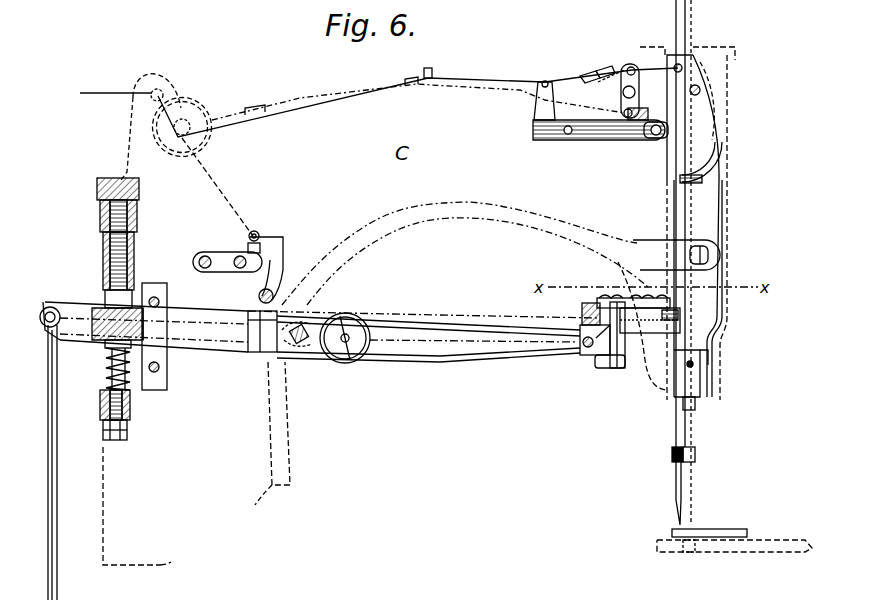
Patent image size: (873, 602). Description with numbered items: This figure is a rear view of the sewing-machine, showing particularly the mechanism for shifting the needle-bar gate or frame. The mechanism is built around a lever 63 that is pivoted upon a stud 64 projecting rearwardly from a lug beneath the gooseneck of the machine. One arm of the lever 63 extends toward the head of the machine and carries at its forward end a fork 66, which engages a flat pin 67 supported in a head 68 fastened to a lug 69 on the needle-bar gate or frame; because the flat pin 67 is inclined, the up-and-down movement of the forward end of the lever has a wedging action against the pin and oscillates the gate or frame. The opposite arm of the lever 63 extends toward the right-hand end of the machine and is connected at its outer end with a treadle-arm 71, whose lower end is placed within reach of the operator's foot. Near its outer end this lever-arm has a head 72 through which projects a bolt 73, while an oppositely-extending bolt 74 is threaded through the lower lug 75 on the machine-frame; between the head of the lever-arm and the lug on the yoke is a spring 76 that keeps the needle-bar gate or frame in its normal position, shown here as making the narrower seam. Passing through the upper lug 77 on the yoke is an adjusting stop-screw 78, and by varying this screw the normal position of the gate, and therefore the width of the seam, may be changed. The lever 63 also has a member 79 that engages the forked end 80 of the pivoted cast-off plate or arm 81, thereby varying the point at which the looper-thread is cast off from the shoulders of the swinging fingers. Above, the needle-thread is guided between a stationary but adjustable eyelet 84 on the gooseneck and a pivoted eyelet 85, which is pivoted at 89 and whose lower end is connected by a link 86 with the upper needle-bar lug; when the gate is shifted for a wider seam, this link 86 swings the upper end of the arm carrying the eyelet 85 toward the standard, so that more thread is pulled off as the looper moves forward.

The lever 63 is at (448, 360).
The stud 64 is at (350, 362).
The fork 66 is at (588, 356).
The flat pin 67 is at (605, 368).
The head 68 is at (620, 370).
The lug 69 is at (640, 333).
The treadle-arm 71 is at (57, 590).
The head 72 is at (98, 306).
The bolt 73 is at (108, 343).
The bolt 74 is at (127, 422).
The lower lug 75 is at (102, 410).
The spring 76 is at (106, 388).
The upper lug 77 is at (135, 262).
The adjusting stop-screw 78 is at (98, 212).
The member 79 is at (310, 344).
The forked end 80 is at (262, 354).
The cast-off plate or arm 81 is at (258, 288).
The eyelet 84 is at (545, 78).
The pivoted eyelet 85 is at (630, 68).
The link 86 is at (652, 136).
The pivot 89 is at (628, 92).